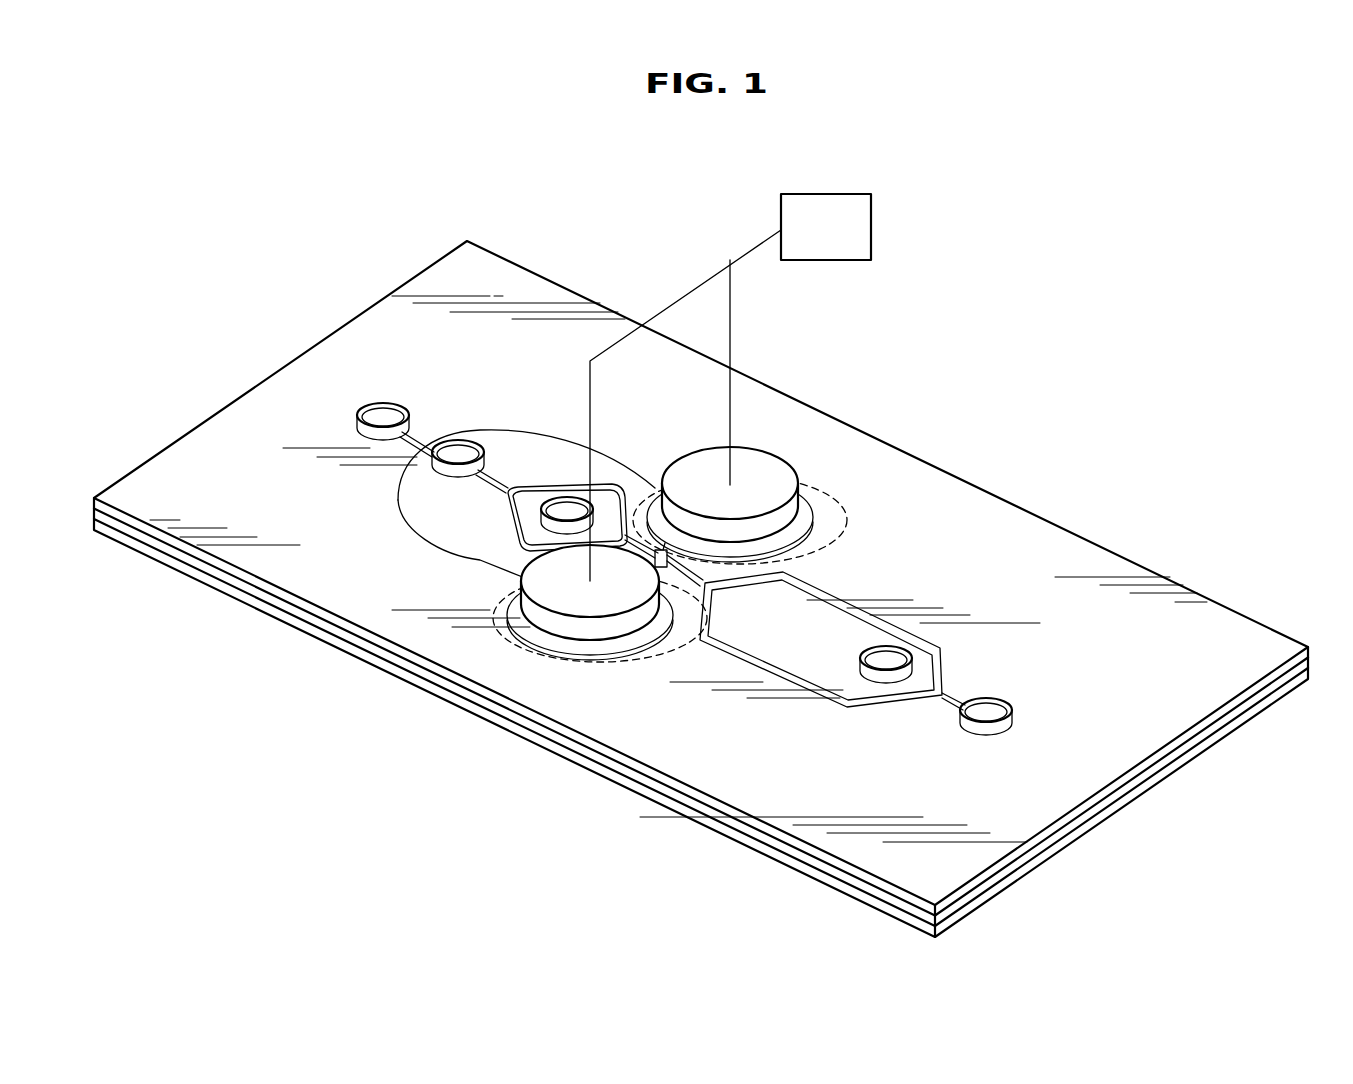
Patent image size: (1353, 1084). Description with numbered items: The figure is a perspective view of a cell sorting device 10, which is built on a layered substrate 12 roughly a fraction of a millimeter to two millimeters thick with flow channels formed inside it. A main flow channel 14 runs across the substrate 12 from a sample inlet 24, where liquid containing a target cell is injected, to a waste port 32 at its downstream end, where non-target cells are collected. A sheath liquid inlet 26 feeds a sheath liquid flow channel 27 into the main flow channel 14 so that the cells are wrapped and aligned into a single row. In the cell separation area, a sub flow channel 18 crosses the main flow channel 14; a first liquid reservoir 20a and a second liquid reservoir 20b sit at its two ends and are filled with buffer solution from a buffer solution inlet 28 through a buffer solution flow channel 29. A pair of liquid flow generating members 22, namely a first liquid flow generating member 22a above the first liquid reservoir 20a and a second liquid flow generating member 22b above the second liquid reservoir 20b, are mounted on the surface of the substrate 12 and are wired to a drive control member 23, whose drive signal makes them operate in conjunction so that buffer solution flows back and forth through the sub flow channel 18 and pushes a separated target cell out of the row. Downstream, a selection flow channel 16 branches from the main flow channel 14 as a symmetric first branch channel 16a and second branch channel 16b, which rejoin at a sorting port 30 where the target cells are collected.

The cell sorting device 10 is at (1040, 358).
The substrate 12 is at (1066, 517).
The main flow channel 14 is at (637, 533).
The selection flow channel 16 is at (711, 609).
The first branch channel 16a is at (827, 548).
The second branch channel 16b is at (690, 630).
The sub flow channel 18 is at (667, 533).
The first liquid reservoir 20a is at (813, 493).
The second liquid reservoir 20b is at (530, 627).
The liquid flow generating members 22 is at (709, 527).
The first liquid flow generating member 22a is at (763, 463).
The second liquid flow generating member 22b is at (597, 597).
The drive control member 23 is at (871, 227).
The sample inlet 24 is at (567, 512).
The sheath liquid inlet 26 is at (457, 458).
The sheath liquid flow channel 27 is at (497, 457).
The buffer solution inlet 28 is at (377, 420).
The buffer solution flow channel 29 is at (445, 540).
The sorting port 30 is at (986, 710).
The waste port 32 is at (886, 673).